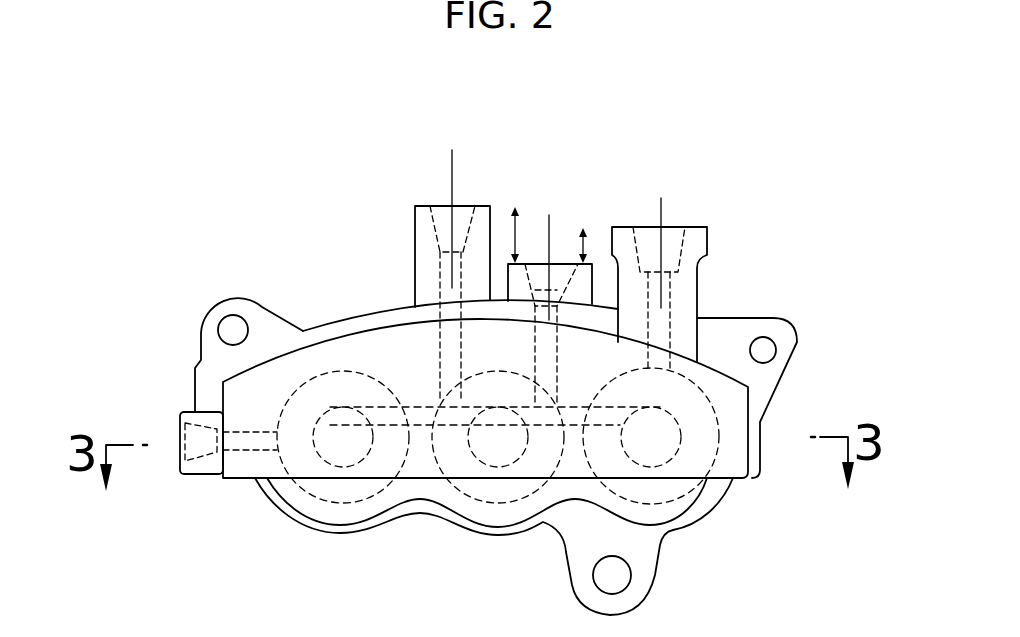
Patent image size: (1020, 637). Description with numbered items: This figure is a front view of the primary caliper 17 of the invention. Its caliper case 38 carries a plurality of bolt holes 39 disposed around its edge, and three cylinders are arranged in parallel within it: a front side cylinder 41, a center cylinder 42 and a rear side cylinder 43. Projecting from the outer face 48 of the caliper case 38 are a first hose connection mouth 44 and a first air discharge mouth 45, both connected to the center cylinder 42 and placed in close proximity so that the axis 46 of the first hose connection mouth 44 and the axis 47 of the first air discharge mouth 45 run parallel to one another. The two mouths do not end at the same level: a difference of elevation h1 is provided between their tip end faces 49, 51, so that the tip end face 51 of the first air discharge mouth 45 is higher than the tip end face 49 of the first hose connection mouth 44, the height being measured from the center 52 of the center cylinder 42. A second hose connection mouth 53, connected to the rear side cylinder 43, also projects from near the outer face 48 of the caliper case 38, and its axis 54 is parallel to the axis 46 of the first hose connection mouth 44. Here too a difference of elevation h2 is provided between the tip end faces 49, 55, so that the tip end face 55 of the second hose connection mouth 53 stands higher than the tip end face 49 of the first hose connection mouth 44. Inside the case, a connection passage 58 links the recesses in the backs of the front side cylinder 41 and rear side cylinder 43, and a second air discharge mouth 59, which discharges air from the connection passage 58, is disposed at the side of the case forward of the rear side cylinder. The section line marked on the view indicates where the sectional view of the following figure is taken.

The primary caliper 17 is at (282, 226).
The caliper case 38 is at (340, 335).
The bolt holes 39 is at (222, 324).
The front side cylinder 41 is at (312, 487).
The center cylinder 42 is at (497, 497).
The rear side cylinder 43 is at (688, 490).
The first hose connection mouth 44 is at (571, 292).
The first air discharge mouth 45 is at (431, 233).
The axis of the first hose connection mouth 46 is at (549, 215).
The axis of the first air discharge mouth 47 is at (452, 176).
The outer face 48 is at (380, 306).
The tip end face of the first hose connection mouth 49 is at (560, 260).
The tip end face of the first air discharge mouth 51 is at (433, 206).
The center of the center cylinder 52 is at (497, 440).
The second hose connection mouth 53 is at (673, 241).
The axis of the second hose connection mouth 54 is at (662, 213).
The tip end face of the second hose connection mouth 55 is at (699, 226).
The connection passage 58 is at (383, 420).
The second air discharge mouth 59 is at (183, 462).
The difference of elevation h1 is at (517, 236).
The difference of elevation h2 is at (587, 240).